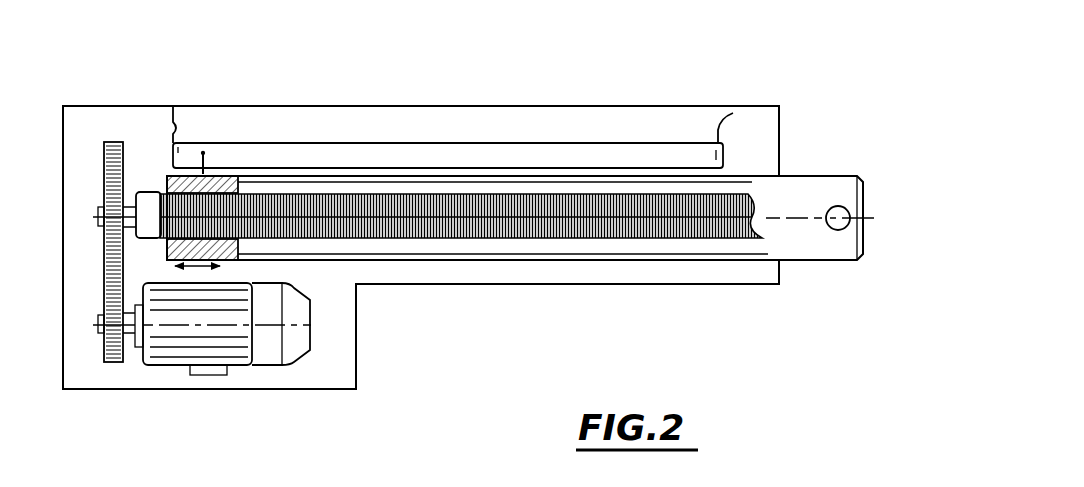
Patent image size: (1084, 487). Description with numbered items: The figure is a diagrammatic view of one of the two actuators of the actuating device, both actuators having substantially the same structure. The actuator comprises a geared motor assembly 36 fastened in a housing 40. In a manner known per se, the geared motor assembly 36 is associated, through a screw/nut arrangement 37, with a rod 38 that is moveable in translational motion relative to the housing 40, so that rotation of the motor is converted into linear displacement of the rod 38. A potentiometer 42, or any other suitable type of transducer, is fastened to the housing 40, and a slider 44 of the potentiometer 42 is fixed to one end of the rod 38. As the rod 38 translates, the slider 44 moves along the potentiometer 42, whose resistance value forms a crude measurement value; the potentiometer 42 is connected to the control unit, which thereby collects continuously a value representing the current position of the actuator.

The geared motor assembly 36 is at (231, 365).
The screw/nut arrangement 37 is at (157, 248).
The rod 38 is at (476, 263).
The housing 40 is at (318, 395).
The potentiometer 42 is at (730, 158).
The slider 44 is at (212, 163).